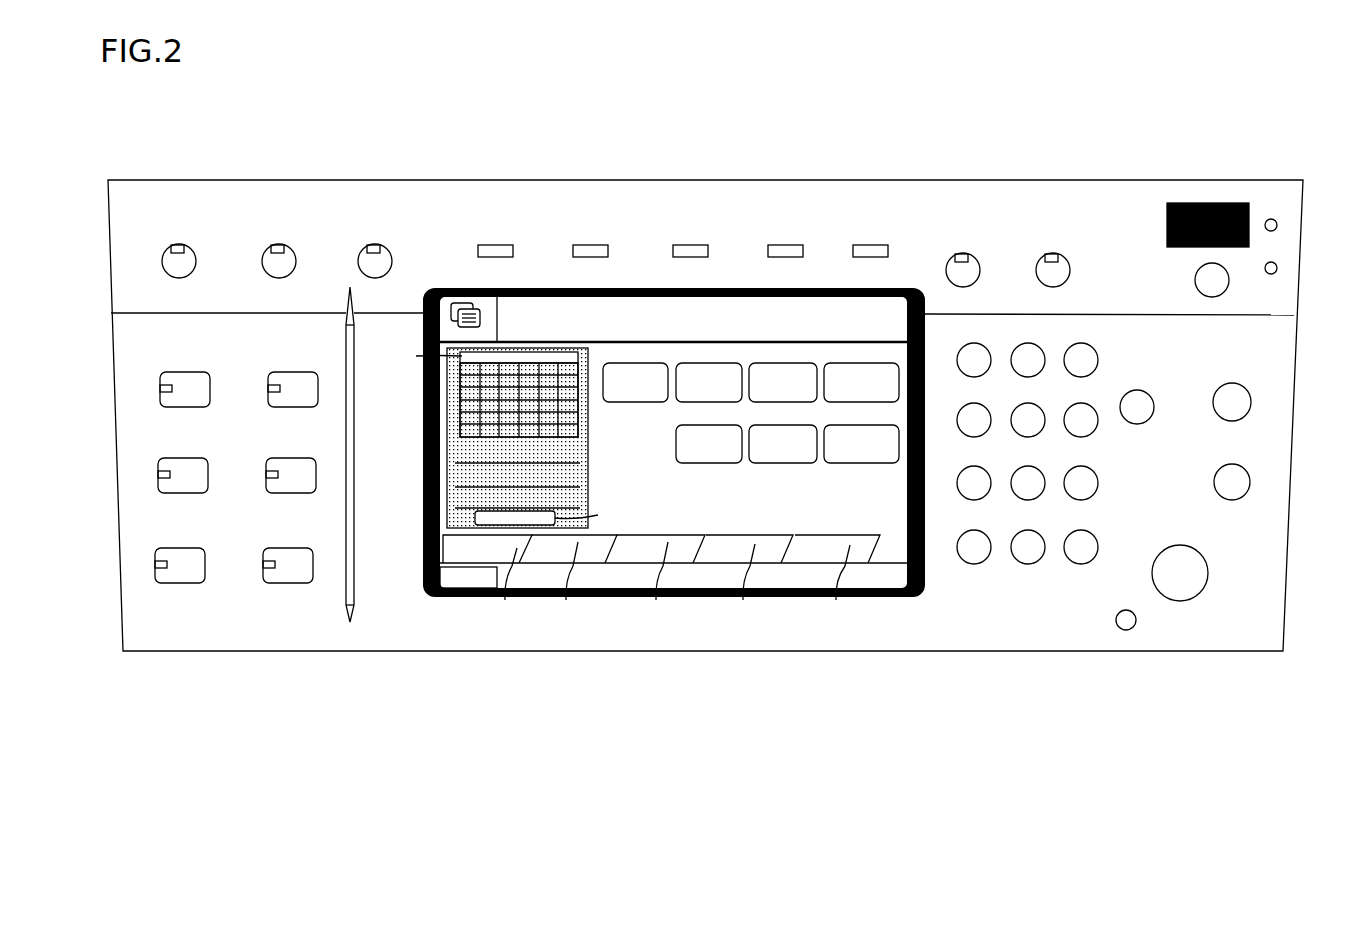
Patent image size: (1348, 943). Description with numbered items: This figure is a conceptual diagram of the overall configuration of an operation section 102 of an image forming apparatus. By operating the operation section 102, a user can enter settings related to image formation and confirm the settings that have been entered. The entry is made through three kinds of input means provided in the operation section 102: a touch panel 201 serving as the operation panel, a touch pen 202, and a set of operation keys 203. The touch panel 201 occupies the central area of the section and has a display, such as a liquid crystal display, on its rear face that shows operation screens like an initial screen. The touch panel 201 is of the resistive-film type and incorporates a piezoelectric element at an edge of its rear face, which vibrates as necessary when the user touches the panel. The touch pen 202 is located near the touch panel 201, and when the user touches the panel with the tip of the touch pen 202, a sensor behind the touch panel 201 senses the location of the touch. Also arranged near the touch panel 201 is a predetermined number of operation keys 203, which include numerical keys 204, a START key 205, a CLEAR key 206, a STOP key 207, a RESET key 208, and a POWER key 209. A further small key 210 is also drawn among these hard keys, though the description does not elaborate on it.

The operation section 102 is at (712, 664).
The touch panel 201 is at (520, 640).
The touch pen 202 is at (348, 622).
The operation keys 203 is at (1091, 535).
The numerical keys 204 is at (1022, 592).
The START key 205 is at (1180, 587).
The CLEAR key 206 is at (1133, 425).
The STOP key 207 is at (1232, 492).
The RESET key 208 is at (1234, 412).
The POWER key 209 is at (1218, 289).
The setup key 210 is at (1126, 628).